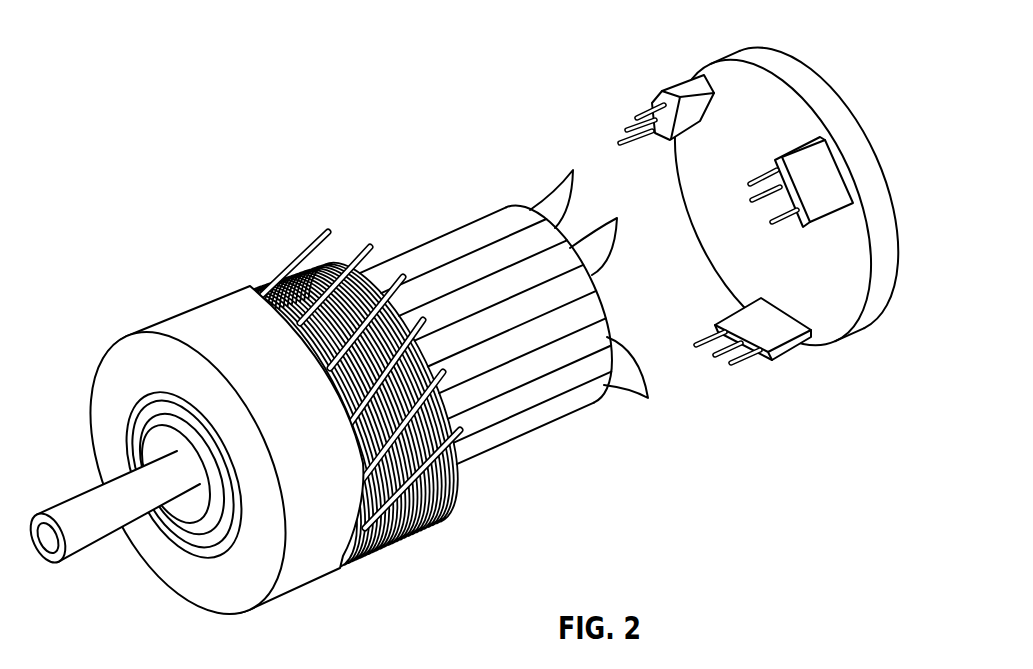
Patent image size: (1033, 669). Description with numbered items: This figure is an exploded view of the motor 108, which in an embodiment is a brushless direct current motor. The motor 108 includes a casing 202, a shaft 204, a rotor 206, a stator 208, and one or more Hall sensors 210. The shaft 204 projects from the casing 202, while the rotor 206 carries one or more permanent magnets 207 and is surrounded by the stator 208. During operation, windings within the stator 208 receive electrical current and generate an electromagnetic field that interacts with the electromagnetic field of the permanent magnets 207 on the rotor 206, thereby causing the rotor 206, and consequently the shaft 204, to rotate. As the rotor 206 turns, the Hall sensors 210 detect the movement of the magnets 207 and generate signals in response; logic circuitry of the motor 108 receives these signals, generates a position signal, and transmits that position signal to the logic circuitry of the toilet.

The motor 108 is at (467, 341).
The casing 202 is at (297, 593).
The shaft 204 is at (75, 560).
The rotor 206 is at (458, 213).
The permanent magnets 207 is at (573, 172).
The stator 208 is at (278, 288).
The Hall sensors 210 is at (682, 80).